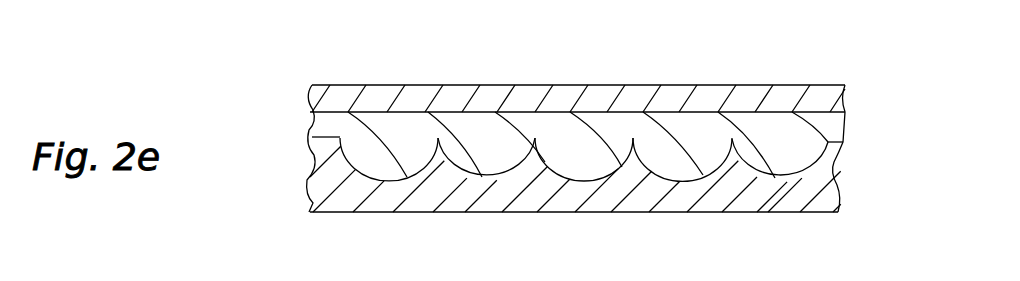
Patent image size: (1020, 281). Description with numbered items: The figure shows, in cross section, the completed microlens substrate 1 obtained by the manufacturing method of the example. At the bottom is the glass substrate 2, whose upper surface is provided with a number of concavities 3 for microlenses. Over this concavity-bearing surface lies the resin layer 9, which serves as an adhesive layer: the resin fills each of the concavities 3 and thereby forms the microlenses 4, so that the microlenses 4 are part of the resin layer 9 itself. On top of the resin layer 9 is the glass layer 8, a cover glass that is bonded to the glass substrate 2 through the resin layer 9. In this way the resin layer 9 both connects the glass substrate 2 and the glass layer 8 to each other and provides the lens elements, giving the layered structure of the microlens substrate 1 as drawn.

The microlens substrate 1 is at (851, 70).
The glass substrate 2 is at (328, 186).
The concavities 3 is at (593, 181).
The microlenses 4 is at (683, 168).
The glass layer 8 is at (328, 95).
The resin layer 9 is at (328, 123).